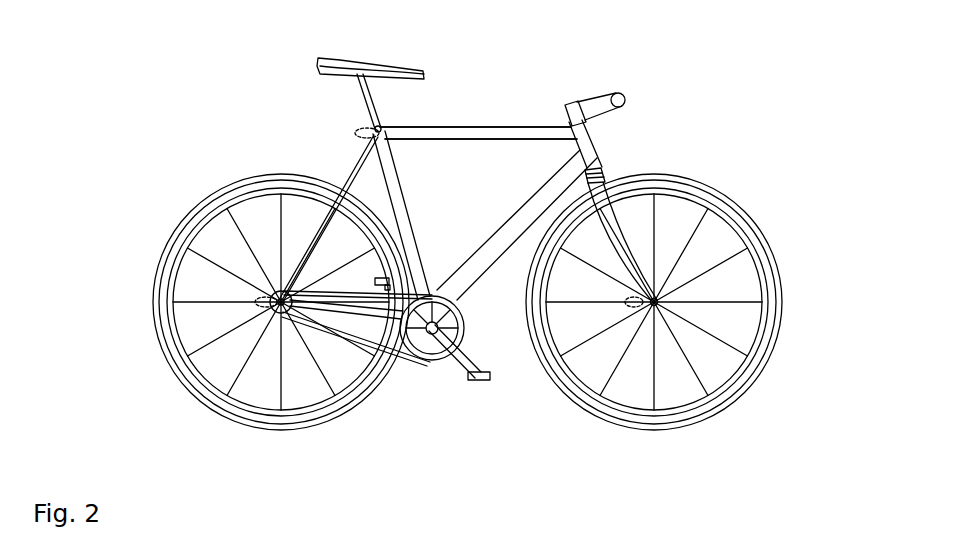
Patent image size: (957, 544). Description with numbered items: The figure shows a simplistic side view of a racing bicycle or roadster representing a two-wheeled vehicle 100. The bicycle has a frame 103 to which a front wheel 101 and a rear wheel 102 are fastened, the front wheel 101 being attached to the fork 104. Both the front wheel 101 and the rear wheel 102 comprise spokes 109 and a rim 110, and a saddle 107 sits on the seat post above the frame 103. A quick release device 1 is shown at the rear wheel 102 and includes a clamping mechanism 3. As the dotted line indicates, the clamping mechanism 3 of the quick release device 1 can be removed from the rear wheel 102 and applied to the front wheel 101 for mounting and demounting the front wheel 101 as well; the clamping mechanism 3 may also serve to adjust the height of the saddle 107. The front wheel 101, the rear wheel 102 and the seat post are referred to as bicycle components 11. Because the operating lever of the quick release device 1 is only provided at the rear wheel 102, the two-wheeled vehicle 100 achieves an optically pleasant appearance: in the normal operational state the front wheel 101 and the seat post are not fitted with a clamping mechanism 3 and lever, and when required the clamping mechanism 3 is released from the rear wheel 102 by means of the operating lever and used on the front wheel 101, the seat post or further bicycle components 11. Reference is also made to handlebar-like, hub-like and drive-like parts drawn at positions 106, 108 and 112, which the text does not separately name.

The two-wheeled vehicle 100 is at (195, 95).
The quick release device 1 is at (635, 317).
The clamping mechanism 3 is at (365, 130).
The bicycle components 11 is at (297, 55).
The front wheel 101 is at (748, 225).
The rear wheel 102 is at (185, 227).
The frame 103 is at (483, 128).
The fork 104 is at (611, 218).
The handlebar 106 is at (598, 103).
The saddle 107 is at (355, 60).
The front hub 108 is at (657, 300).
The spokes 109 is at (745, 305).
The rim 110 is at (757, 343).
The crank drive 112 is at (446, 278).